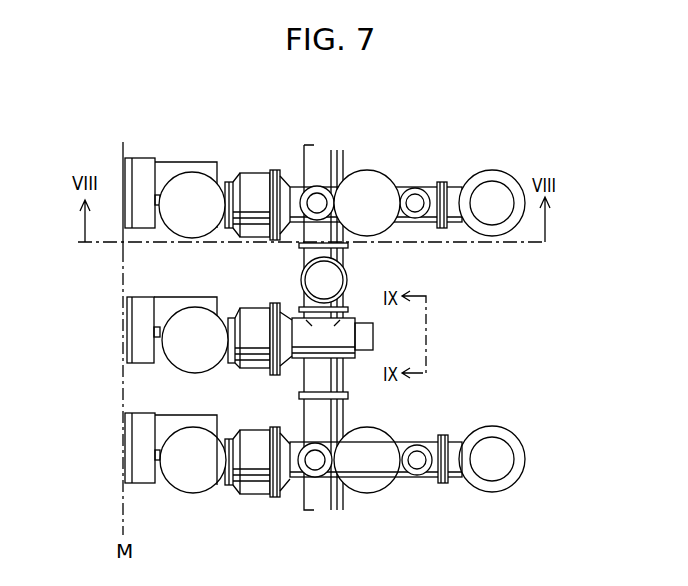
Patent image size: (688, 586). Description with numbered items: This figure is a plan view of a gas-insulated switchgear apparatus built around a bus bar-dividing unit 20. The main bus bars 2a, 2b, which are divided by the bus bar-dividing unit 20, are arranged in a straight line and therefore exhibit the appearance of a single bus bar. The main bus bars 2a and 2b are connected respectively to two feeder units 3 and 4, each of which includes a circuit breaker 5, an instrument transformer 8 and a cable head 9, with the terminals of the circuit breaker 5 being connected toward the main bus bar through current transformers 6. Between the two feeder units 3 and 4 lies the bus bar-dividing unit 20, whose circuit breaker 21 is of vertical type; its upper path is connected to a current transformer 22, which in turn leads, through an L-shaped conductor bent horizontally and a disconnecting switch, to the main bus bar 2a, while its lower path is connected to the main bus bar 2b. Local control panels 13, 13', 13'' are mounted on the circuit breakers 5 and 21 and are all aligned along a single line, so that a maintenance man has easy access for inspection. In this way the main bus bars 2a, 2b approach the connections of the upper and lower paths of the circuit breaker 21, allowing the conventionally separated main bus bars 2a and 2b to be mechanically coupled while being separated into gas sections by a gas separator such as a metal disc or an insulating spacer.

The local control panel 13 is at (142, 165).
The local control panel 13' is at (112, 330).
The local control panel 13'' is at (116, 448).
The circuit breaker 5 is at (186, 185).
The current transformer 6 is at (254, 190).
The instrument transformer 8 is at (367, 185).
The cable head 9 is at (488, 196).
The feeder unit 3 is at (446, 141).
The feeder unit 4 is at (485, 397).
The bus bar-dividing unit 20 is at (495, 330).
The circuit breaker 21 is at (193, 317).
The current transformer 22 is at (257, 324).
The main bus bar 2a is at (348, 257).
The main bus bar 2b is at (345, 378).